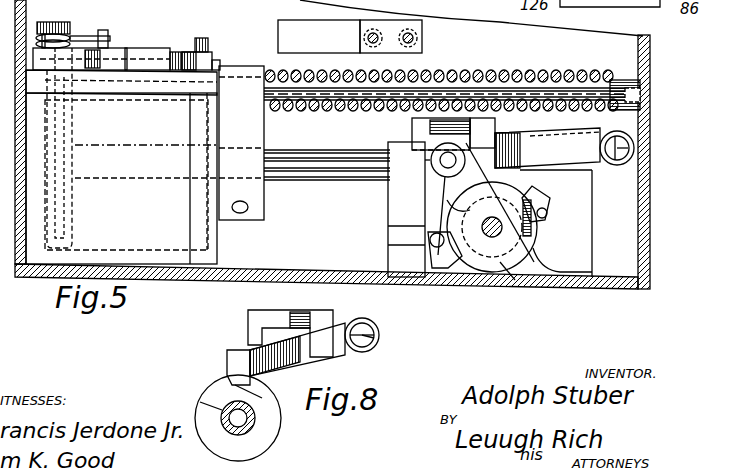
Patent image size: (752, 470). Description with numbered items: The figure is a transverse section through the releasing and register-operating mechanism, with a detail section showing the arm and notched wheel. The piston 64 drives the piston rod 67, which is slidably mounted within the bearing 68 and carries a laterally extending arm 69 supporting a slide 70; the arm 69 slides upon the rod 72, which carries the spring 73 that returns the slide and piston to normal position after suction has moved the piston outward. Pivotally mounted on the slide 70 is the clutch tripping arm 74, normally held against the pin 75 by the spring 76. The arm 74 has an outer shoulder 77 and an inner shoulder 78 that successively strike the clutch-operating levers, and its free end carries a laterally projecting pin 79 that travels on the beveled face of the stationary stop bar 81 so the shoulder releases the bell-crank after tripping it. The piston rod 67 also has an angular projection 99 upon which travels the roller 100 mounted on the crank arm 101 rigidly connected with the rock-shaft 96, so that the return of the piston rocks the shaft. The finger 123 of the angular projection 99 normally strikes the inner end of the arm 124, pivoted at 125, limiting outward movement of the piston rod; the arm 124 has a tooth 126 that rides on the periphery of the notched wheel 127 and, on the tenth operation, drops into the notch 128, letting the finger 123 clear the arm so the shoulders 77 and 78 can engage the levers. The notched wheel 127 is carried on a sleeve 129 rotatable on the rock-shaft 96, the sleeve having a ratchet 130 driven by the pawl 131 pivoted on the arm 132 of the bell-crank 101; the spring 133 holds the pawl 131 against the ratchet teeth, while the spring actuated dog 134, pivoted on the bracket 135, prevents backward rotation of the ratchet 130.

In FIG. 5, the piston 64 is at (62, 215).
In FIG. 5, the piston rod 67 is at (313, 168).
In FIG. 5, the bearing 68 is at (406, 209).
In FIG. 5, the arm 69 is at (262, 142).
In FIG. 5, the slide 70 is at (150, 95).
In FIG. 5, the rod 72 is at (546, 92).
In FIG. 5, the spring 73 is at (435, 76).
In FIG. 5, the clutch tripping arm 74 is at (143, 55).
In FIG. 5, the pin 75 is at (176, 56).
In FIG. 5, the spring 76 is at (80, 38).
In FIG. 5, the outer shoulder 77 is at (208, 60).
In FIG. 5, the inner shoulder 78 is at (125, 72).
In FIG. 5, the laterally projecting pin 79 is at (203, 42).
In FIG. 5, the stationary stop bar 81 is at (350, 36).
In FIG. 5, the rock-shaft 96 is at (512, 235).
In FIG. 8, the rock-shaft 96 is at (255, 420).
In FIG. 5, the angular projection 99 is at (612, 135).
In FIG. 8, the angular projection 99 is at (322, 345).
In FIG. 5, the roller 100 is at (462, 148).
In FIG. 5, the crank arm 101 is at (400, 203).
In FIG. 5, the finger 123 is at (412, 136).
In FIG. 8, the finger 123 is at (248, 340).
In FIG. 5, the arm 124 is at (547, 148).
In FIG. 8, the arm 124 is at (297, 349).
In FIG. 5, the pivot 125 is at (628, 148).
In FIG. 8, the pivot 125 is at (378, 338).
In FIG. 8, the tooth 126 is at (257, 393).
In FIG. 5, the notched wheel 127 is at (592, 272).
In FIG. 8, the notched wheel 127 is at (205, 407).
In FIG. 8, the notch 128 is at (228, 368).
In FIG. 8, the sleeve 129 is at (225, 426).
In FIG. 5, the ratchet 130 is at (515, 280).
In FIG. 5, the pawl 131 is at (534, 198).
In FIG. 5, the arm 132 is at (548, 213).
In FIG. 5, the spring 133 is at (531, 222).
In FIG. 5, the spring actuated dog 134 is at (450, 268).
In FIG. 5, the bracket 135 is at (406, 248).